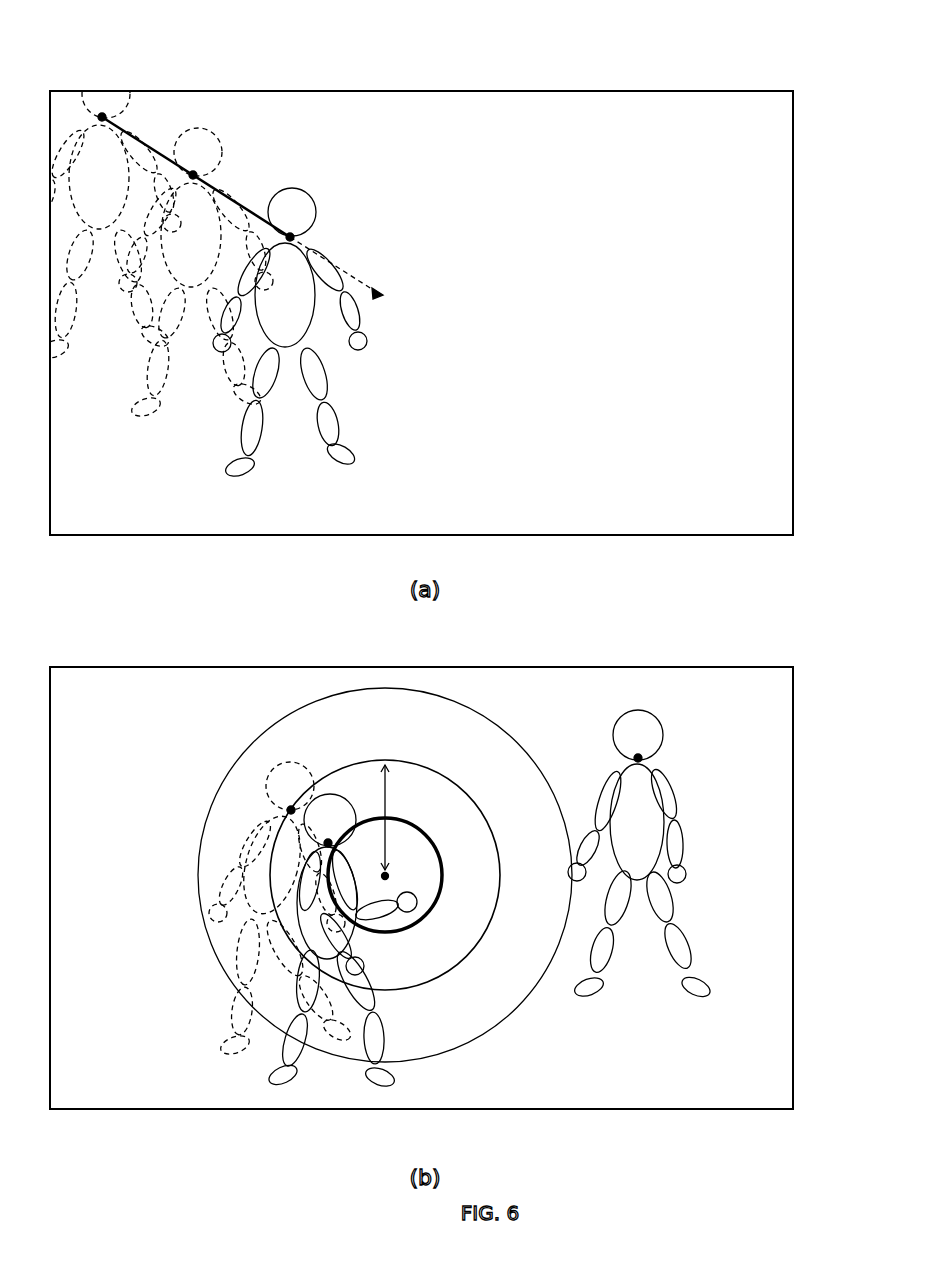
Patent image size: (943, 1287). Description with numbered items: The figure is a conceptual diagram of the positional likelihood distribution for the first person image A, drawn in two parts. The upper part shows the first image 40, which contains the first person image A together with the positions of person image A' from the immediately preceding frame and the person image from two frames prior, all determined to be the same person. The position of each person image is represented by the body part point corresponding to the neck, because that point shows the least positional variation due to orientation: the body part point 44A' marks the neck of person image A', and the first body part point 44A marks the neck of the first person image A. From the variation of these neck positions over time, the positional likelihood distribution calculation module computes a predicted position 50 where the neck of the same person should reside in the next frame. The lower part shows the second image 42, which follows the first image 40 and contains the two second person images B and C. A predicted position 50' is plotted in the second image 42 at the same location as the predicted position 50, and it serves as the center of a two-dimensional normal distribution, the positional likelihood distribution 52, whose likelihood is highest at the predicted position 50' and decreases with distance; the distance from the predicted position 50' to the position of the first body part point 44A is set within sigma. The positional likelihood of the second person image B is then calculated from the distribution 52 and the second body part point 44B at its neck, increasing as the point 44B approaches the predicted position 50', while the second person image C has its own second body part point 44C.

The first image 40 is at (616, 90).
The second image 42 is at (619, 667).
The first body part point 44A is at (222, 426).
The body part point 44A' is at (220, 98).
The second body part point 44B is at (332, 843).
The second body part point 44C is at (642, 758).
The predicted position 50 is at (432, 290).
The predicted position 50' is at (438, 848).
The positional likelihood distribution 52 is at (228, 756).
The first person image A is at (282, 676).
The person image A' is at (196, 318).
The second person image B is at (342, 1060).
The second person image C is at (637, 985).